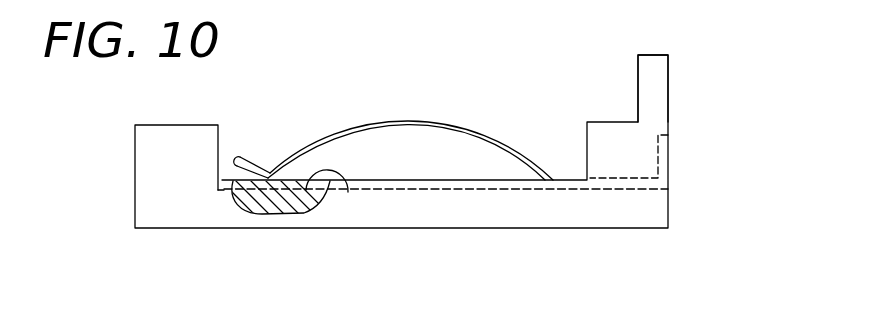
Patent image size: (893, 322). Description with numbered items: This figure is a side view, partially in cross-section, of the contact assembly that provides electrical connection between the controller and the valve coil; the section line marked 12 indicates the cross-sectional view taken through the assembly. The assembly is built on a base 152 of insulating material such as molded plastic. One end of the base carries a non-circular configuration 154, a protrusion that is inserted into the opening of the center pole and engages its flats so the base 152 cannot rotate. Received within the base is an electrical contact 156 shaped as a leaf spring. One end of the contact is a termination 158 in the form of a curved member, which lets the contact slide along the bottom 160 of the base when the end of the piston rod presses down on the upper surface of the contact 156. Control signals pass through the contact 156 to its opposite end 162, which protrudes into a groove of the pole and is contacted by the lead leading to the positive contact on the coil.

The base 152 is at (557, 228).
The non-circular configuration 154 is at (668, 73).
The electrical contact 156 is at (525, 148).
The termination 158 is at (273, 170).
The bottom 160 is at (348, 192).
The end 162 is at (668, 148).
The section line 12- 12 is at (414, 77).